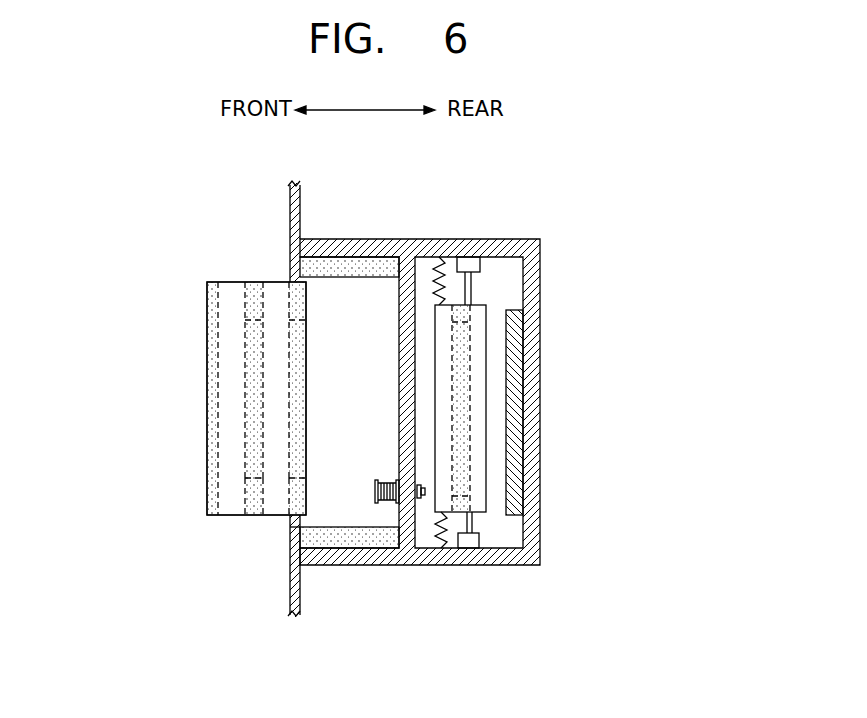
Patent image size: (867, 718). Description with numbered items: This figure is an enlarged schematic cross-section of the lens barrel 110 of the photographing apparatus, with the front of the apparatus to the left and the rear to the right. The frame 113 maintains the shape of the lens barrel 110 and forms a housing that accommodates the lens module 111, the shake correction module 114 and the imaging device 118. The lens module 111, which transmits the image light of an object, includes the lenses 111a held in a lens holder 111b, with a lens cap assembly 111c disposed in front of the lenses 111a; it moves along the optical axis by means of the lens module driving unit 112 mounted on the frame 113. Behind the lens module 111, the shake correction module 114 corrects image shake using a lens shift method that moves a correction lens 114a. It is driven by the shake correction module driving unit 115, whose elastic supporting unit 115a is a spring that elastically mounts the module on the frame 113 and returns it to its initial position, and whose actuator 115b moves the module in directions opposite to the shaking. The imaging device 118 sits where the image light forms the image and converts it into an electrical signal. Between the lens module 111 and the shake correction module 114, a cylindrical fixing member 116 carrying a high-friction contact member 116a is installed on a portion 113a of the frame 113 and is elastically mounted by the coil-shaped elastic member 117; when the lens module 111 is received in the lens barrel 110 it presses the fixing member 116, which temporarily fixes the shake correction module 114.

The lens barrel 110 is at (616, 146).
The lens module 111 is at (210, 344).
The lenses 111a is at (295, 465).
The lens holder 111b is at (253, 505).
The lens cap assembly 111c is at (213, 440).
The lens module driving unit 112 is at (317, 543).
The frame 113 is at (530, 547).
The portion of the frame 113a is at (403, 310).
The shake correction module 114 is at (540, 343).
The correction lens 114a is at (470, 370).
The shake correction module driving unit 115 is at (491, 579).
The elastic supporting unit 115a is at (440, 543).
The actuator 115b is at (472, 542).
The fixing member 116 is at (370, 542).
The contact member 116a is at (427, 497).
The elastic member 117 is at (387, 499).
The imaging device 118 is at (517, 402).